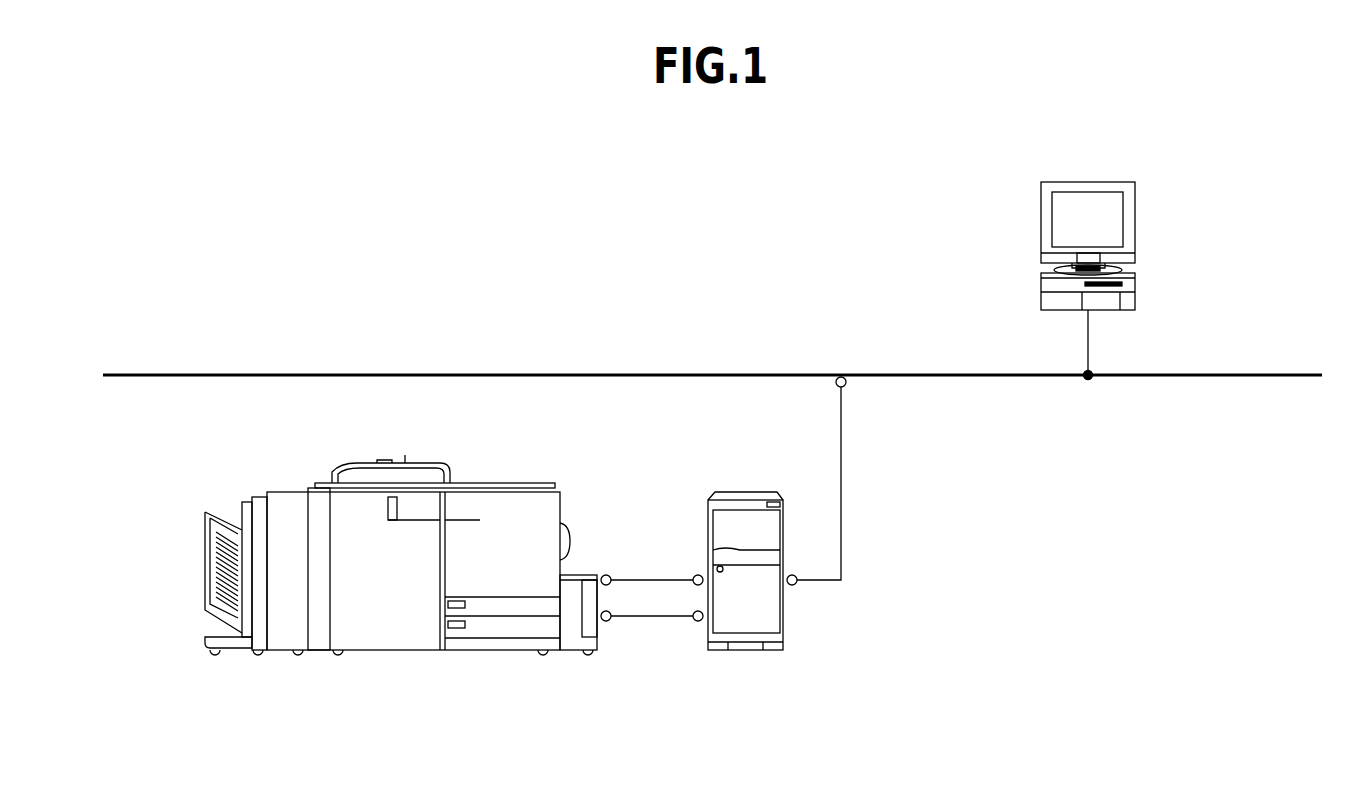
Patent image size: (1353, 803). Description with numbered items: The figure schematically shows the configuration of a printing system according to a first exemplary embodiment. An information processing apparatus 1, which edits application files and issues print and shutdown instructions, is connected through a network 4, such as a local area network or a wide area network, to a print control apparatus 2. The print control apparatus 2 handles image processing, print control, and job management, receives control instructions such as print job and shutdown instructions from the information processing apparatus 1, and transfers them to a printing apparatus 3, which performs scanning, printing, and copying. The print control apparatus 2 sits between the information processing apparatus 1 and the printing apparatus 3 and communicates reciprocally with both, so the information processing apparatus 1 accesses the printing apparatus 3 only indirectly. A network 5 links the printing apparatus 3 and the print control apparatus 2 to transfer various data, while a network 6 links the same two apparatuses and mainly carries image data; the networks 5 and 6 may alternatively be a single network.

The information processing apparatus 1 is at (1088, 182).
The print control apparatus 2 is at (784, 624).
The printing apparatus 3 is at (381, 651).
The network 4 is at (432, 373).
The network 5 is at (654, 576).
The network 6 is at (654, 621).